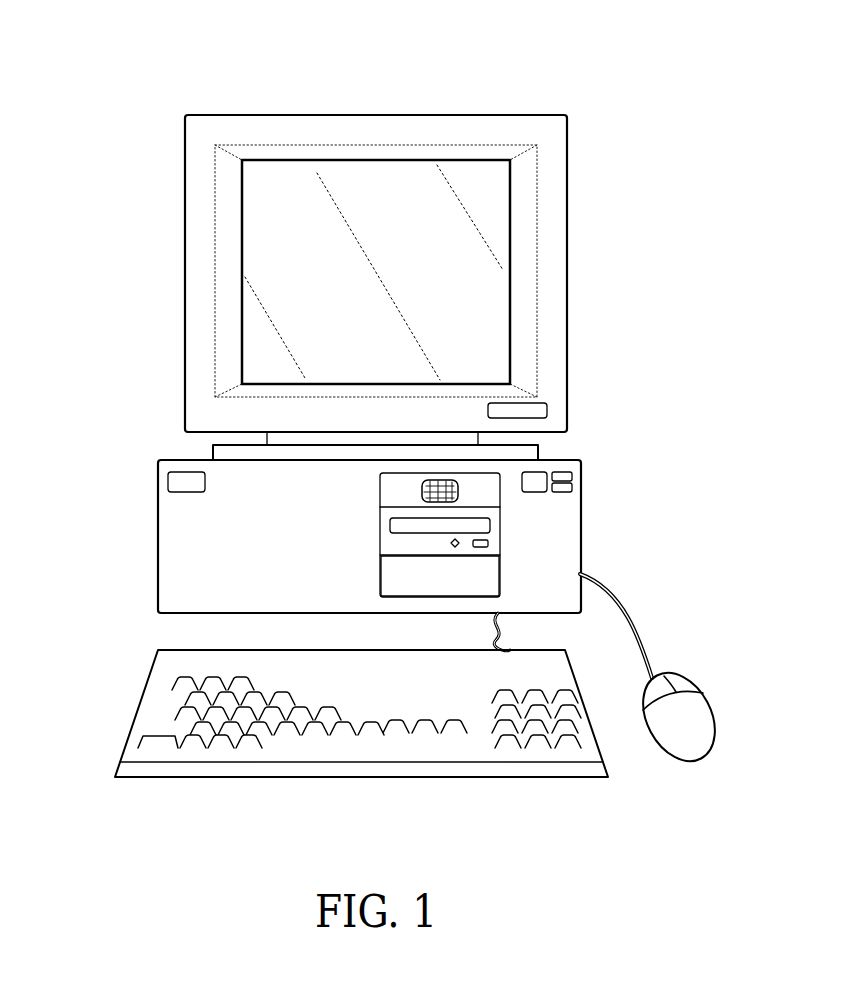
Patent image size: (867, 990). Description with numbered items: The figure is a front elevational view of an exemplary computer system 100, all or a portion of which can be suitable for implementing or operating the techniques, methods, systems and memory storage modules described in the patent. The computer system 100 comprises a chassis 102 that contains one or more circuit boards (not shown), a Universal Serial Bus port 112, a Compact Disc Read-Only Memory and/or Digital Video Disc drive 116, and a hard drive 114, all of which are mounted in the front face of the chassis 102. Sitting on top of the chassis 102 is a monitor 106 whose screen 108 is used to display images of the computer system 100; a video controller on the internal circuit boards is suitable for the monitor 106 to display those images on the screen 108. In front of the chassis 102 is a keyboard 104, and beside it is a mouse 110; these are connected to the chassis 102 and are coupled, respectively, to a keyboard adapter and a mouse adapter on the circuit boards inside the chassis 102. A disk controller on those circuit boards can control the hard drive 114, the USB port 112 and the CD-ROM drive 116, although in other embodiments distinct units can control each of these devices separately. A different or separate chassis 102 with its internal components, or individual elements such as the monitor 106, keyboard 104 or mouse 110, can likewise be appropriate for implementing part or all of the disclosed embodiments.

The computer system 100 is at (562, 88).
The chassis 102 is at (158, 537).
The keyboard 104 is at (138, 698).
The monitor 106 is at (262, 115).
The screen 108 is at (292, 276).
The mouse 110 is at (698, 703).
The Universal Serial Bus (USB) port 112 is at (460, 488).
The hard drive 114 is at (490, 575).
The Compact Disc Read-Only Memory (CD-ROM) and/or Digital Video Disc (DVD) drive 116 is at (500, 532).